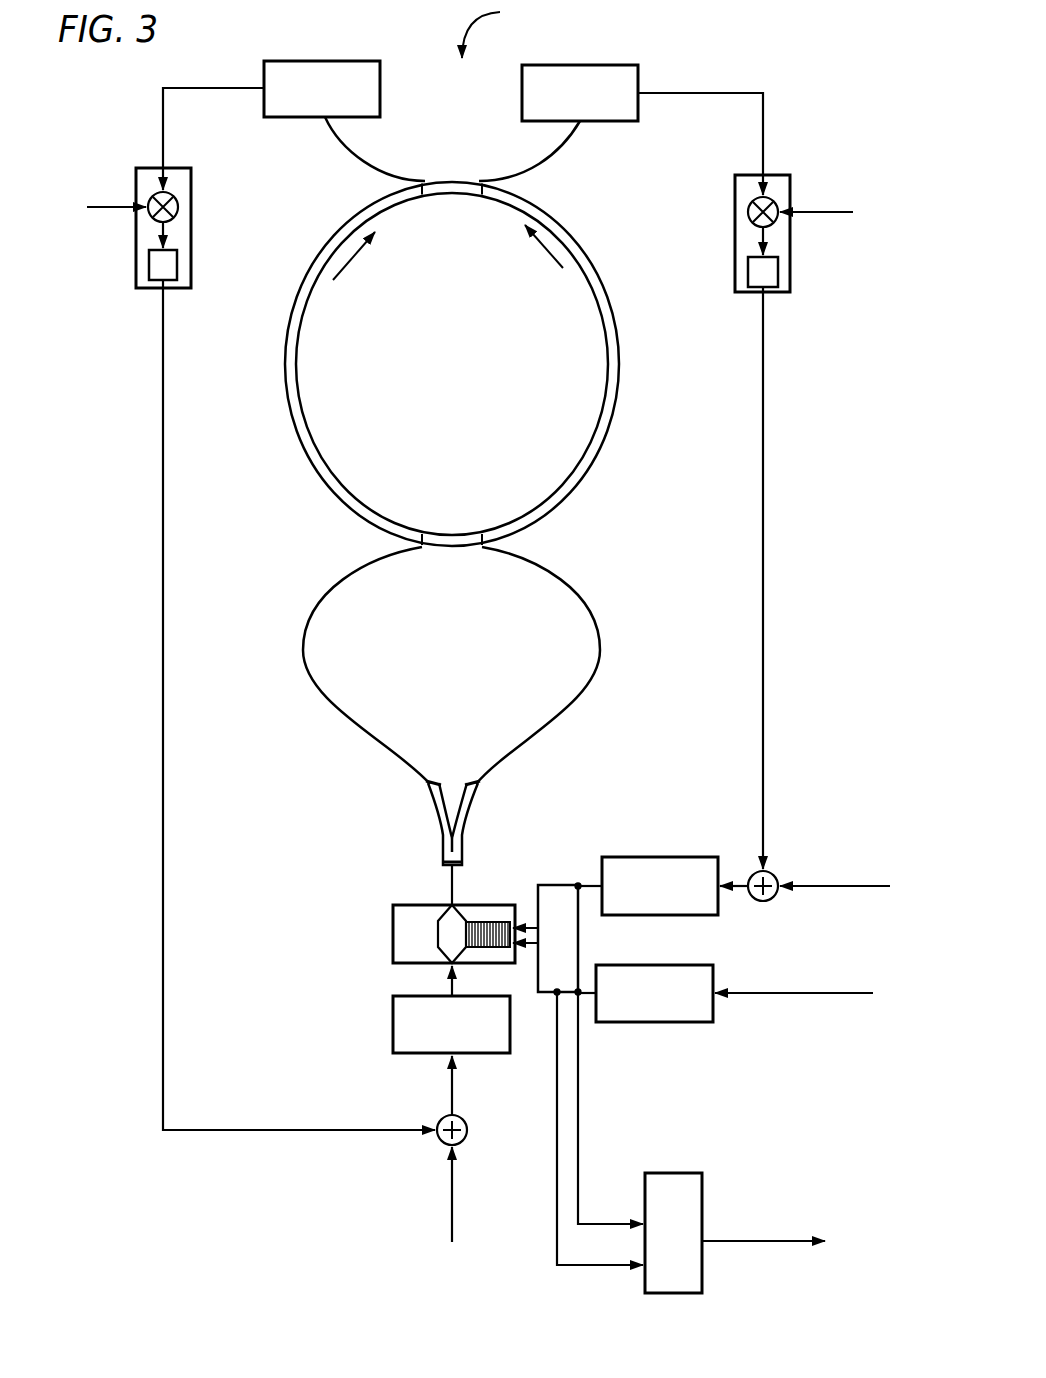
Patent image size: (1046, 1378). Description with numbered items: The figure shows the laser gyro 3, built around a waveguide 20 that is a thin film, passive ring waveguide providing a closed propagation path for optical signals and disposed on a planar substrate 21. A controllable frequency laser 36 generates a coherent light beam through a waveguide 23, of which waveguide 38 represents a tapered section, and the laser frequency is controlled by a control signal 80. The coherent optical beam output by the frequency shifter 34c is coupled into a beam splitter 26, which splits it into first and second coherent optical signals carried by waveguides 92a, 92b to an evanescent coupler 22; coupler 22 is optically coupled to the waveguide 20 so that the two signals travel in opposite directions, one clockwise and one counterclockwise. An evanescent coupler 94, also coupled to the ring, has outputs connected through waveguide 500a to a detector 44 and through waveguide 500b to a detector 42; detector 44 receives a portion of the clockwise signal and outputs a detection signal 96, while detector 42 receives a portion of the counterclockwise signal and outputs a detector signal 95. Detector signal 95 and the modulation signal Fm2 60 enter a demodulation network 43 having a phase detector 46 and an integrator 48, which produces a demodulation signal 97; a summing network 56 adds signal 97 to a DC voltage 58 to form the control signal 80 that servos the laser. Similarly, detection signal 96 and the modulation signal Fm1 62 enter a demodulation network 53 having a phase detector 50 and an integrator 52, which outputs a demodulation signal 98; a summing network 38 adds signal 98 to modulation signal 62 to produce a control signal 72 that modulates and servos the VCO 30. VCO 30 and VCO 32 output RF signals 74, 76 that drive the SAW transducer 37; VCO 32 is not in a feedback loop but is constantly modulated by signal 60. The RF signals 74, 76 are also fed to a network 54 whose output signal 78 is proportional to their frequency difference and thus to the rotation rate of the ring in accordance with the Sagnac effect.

The laser gyro 3 is at (490, 32).
The waveguide 20 is at (548, 503).
The planar substrate 21 is at (626, 231).
The evanescent coupler 22 is at (448, 553).
The waveguide 23 is at (457, 988).
The beam splitter 26 is at (463, 835).
The VCO 30 is at (663, 855).
The VCO 32 is at (643, 1023).
The frequency shifter 34c is at (392, 928).
The controllable frequency laser 36 is at (392, 1020).
The SAW transducer 37 is at (480, 923).
The waveguide tapered section / summing network 38 is at (433, 938).
The detector 42 is at (340, 62).
The detector 44 is at (595, 63).
The demodulation network 43 is at (192, 220).
The phase detector 46 is at (178, 202).
The integrator 48 is at (177, 263).
The phase detector 50 is at (747, 217).
The integrator 52 is at (748, 272).
The demodulation network 53 is at (792, 273).
The network 54 is at (672, 1173).
The summing network 56 is at (465, 1140).
The DC voltage 58 is at (452, 1212).
The modulation signal Fm2 60 is at (108, 215).
The modulation signal Fm1 62 is at (803, 215).
The control signal 72 is at (743, 882).
The RF signal 74 is at (558, 885).
The RF signal 76 is at (537, 980).
The output signal 78 is at (747, 1242).
The control signal 80 is at (452, 1090).
The waveguide 92a is at (600, 657).
The waveguide 92b is at (302, 655).
The evanescent coupler 94 is at (440, 188).
The detector signal 95 is at (215, 85).
The detection signal 96 is at (702, 92).
The demodulation signal 97 is at (160, 578).
The demodulation signal 98 is at (768, 390).
The waveguide 500a is at (540, 160).
The waveguide 500b is at (368, 164).